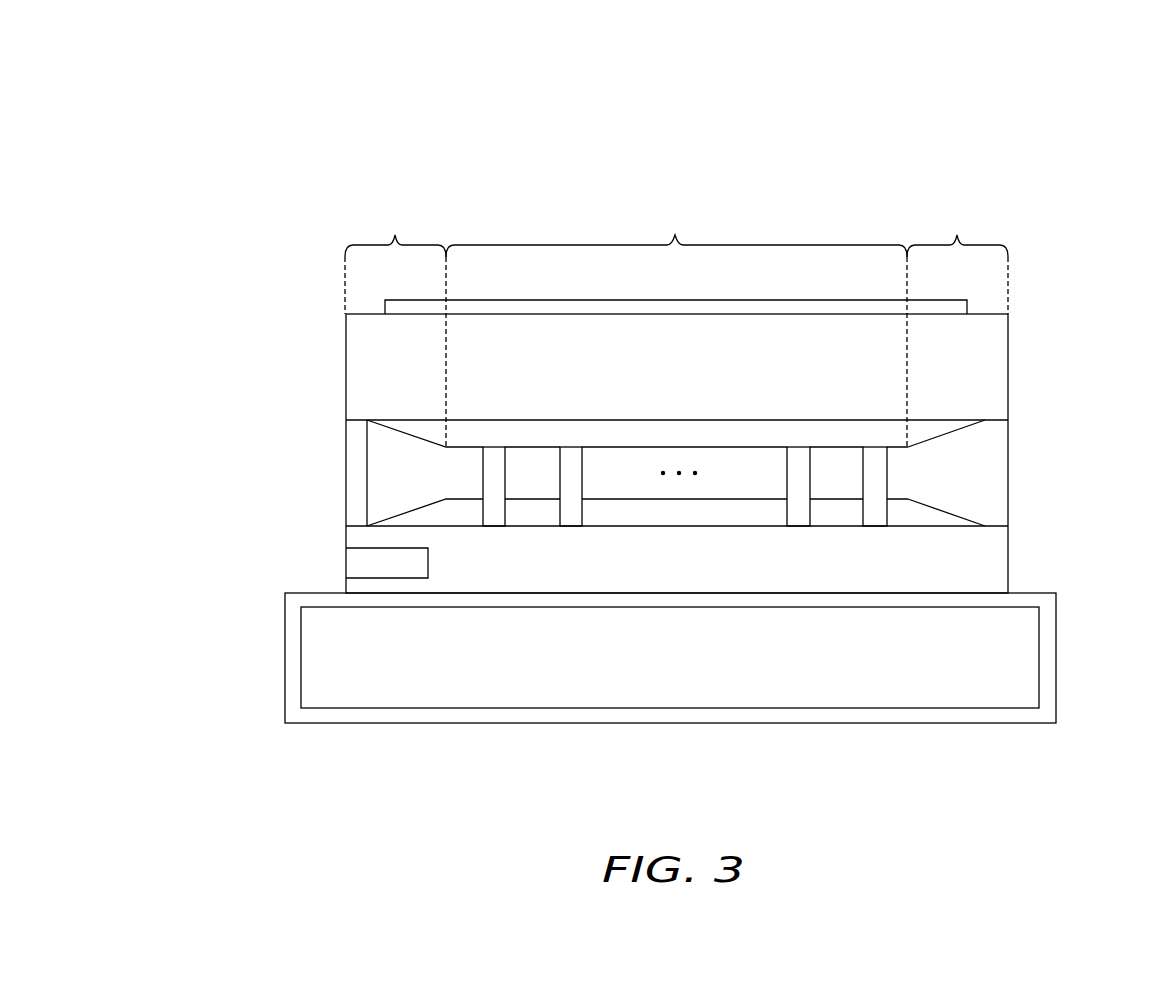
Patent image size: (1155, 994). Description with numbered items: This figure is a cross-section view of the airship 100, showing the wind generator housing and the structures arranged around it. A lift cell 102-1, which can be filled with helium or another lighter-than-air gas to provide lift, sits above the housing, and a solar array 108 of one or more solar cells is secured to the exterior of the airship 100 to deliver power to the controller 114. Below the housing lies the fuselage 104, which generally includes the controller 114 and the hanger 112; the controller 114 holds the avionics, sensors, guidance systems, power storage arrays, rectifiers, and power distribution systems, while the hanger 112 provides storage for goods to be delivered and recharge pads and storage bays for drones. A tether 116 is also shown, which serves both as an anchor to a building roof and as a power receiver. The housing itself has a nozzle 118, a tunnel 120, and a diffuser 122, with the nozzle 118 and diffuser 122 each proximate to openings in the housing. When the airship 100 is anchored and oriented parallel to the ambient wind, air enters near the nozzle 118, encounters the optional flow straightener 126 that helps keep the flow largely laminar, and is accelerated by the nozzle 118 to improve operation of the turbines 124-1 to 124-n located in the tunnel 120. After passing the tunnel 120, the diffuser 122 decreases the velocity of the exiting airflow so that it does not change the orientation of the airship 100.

The airship 100 is at (214, 135).
The lift cell 102-1 is at (343, 371).
The fuselage 104 is at (456, 726).
The solar array 108 is at (970, 304).
The hanger 112 is at (670, 657).
The controller 114 is at (677, 558).
The tether 116 is at (343, 561).
The nozzle 118 is at (676, 351).
The tunnel 120 is at (677, 337).
The diffuser 122 is at (957, 351).
The turbine 124-1 is at (816, 472).
The turbine 124-n is at (893, 477).
The flow straightener 126 is at (343, 471).